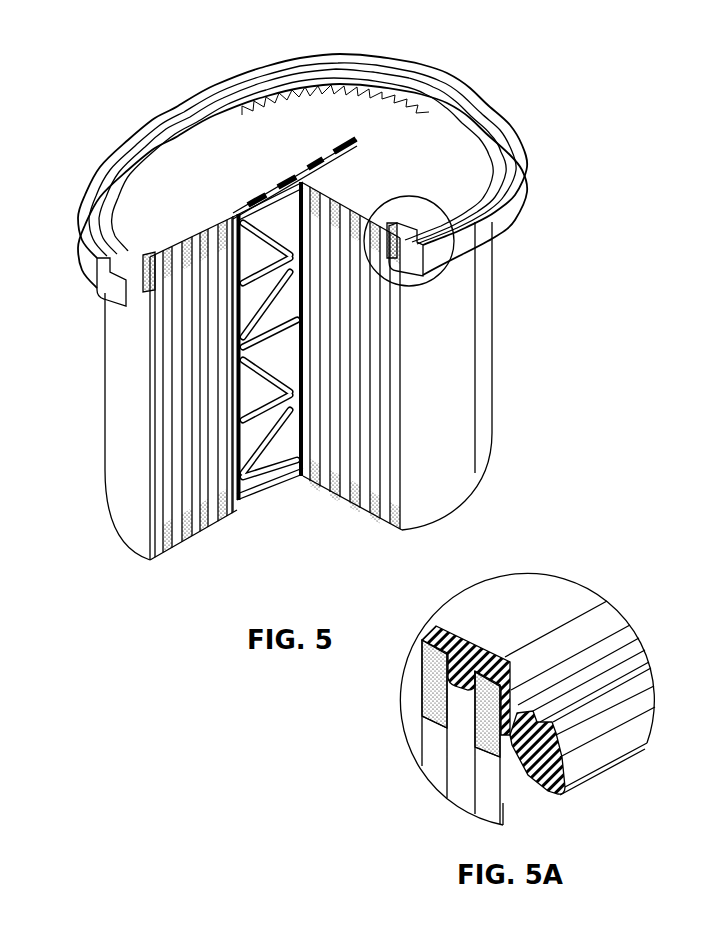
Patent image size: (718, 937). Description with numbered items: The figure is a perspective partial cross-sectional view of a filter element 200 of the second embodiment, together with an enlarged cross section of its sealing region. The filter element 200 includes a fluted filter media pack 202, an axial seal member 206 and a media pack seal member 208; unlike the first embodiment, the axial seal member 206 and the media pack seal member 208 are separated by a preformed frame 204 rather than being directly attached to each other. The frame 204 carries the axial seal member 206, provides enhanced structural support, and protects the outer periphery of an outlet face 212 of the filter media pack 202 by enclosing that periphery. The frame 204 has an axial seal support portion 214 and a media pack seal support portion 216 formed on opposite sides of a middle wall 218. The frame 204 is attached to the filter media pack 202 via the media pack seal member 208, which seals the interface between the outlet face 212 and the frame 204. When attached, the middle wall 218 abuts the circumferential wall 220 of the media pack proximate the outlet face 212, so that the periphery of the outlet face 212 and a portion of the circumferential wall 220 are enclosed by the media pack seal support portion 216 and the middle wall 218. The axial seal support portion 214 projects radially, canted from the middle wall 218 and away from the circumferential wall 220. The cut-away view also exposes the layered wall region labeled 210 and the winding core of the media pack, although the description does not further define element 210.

In FIG. 5, the filter element 200 is at (100, 146).
In FIG. 5, the filter media pack 202 is at (463, 348).
In FIG. 5, the frame 204 is at (478, 112).
In FIG. 5A, the frame 204 is at (541, 594).
In FIG. 5, the axial seal member 206 is at (500, 170).
In FIG. 5A, the axial seal member 206 is at (630, 650).
In FIG. 5, the media pack seal member 208 is at (147, 312).
In FIG. 5A, the media pack seal member 208 is at (466, 637).
In FIG. 5, the inner wall layer 210 is at (172, 552).
In FIG. 5, the outlet face 212 is at (222, 125).
In FIG. 5, the axial seal support portion 214 is at (500, 207).
In FIG. 5A, the axial seal support portion 214 is at (541, 792).
In FIG. 5, the media pack seal support portion 216 is at (448, 250).
In FIG. 5A, the media pack seal support portion 216 is at (480, 648).
In FIG. 5, the middle wall 218 is at (497, 143).
In FIG. 5A, the middle wall 218 is at (512, 700).
In FIG. 5A, the circumferential wall 220 is at (503, 803).